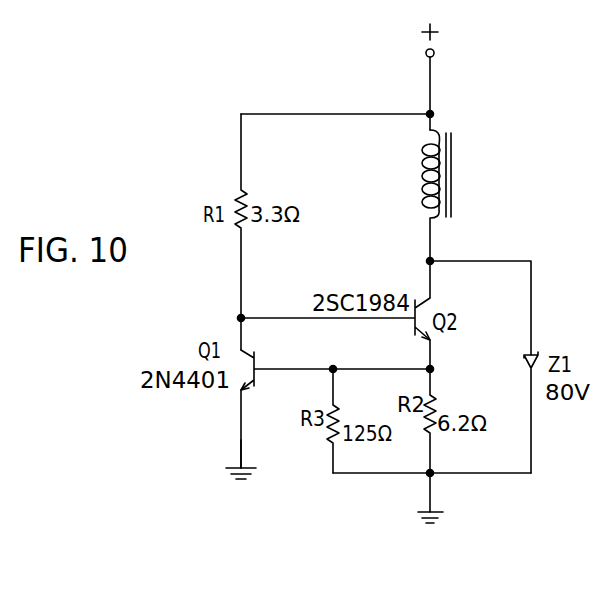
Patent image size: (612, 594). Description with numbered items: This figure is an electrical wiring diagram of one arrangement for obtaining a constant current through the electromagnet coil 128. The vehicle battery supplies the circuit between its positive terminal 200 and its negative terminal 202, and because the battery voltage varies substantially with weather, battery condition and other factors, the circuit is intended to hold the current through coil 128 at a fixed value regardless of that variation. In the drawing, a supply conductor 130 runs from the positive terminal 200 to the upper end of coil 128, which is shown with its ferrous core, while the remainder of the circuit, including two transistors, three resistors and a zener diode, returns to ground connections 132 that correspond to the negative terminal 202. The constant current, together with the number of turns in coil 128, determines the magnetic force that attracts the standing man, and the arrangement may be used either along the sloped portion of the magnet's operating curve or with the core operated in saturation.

The positive terminal 200 is at (434, 52).
The supply conductor 130 is at (430, 92).
The coil 128 is at (424, 178).
The ground conductor 132 is at (238, 440).
The negative terminal 202 is at (253, 478).